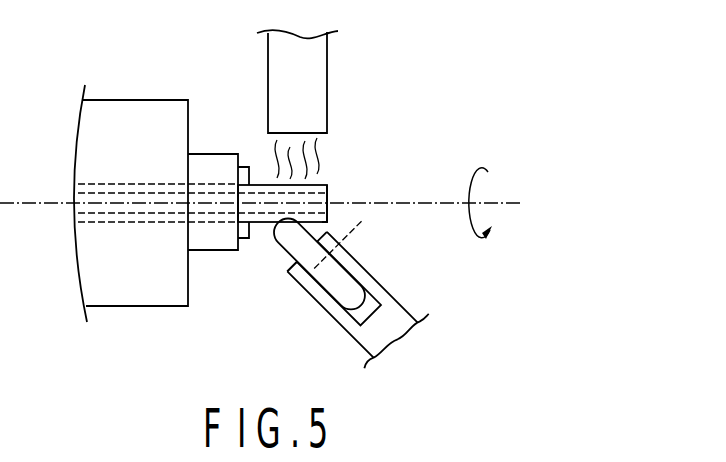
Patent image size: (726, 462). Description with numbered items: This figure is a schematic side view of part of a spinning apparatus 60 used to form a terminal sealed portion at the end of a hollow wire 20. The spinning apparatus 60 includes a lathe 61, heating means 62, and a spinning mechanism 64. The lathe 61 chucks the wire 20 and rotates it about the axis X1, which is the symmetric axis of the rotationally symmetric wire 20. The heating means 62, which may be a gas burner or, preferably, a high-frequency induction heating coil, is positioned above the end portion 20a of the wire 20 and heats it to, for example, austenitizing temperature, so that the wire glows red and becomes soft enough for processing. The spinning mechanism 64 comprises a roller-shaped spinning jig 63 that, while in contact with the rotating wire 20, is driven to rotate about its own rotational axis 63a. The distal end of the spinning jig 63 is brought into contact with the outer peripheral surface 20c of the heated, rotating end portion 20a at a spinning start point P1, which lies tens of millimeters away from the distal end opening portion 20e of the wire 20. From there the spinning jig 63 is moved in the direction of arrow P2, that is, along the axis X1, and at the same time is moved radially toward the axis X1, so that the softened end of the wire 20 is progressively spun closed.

The spinning apparatus 60 is at (432, 90).
The lathe 61 is at (136, 98).
The heating means 62 is at (314, 90).
The wire 20 is at (262, 184).
The end portion 20a is at (294, 185).
The distal end 20e is at (328, 190).
The outer peripheral surface 20c is at (330, 224).
The spinning jig 63 is at (319, 264).
The rotational axis 63a is at (290, 292).
The spinning mechanism 64 is at (352, 297).
The axis X1 is at (433, 203).
The spinning start point P1 is at (288, 230).
The arrow P2 is at (355, 251).